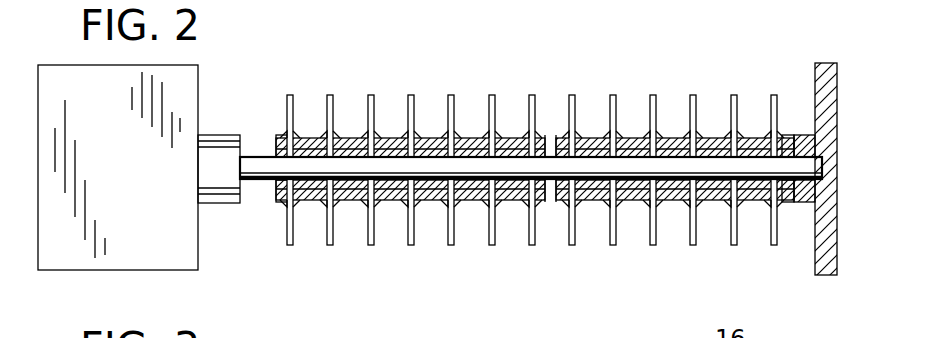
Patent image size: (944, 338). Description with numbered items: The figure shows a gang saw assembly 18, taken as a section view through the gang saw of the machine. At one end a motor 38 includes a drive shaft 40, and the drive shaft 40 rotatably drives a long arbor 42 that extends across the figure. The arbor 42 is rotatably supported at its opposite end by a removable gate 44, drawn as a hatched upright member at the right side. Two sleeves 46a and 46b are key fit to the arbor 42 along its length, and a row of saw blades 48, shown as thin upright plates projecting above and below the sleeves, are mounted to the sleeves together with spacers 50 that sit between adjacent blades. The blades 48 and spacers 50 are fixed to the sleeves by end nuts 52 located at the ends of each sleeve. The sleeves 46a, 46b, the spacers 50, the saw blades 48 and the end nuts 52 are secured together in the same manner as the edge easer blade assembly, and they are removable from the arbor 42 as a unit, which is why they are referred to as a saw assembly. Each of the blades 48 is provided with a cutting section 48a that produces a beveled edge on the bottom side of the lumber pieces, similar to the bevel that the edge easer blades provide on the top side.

The heat exchanger assembly 18 is at (531, 150).
The motor 38 is at (130, 172).
The drive shaft 40 is at (221, 190).
The arbor 42 is at (467, 180).
The removable gate 44 is at (823, 192).
The sleeve 46a is at (390, 201).
The sleeve 46b is at (630, 201).
The saw blades 48 is at (450, 107).
The cutting section 48a is at (362, 138).
The spacers 50 is at (714, 207).
The end nuts 52 is at (280, 137).